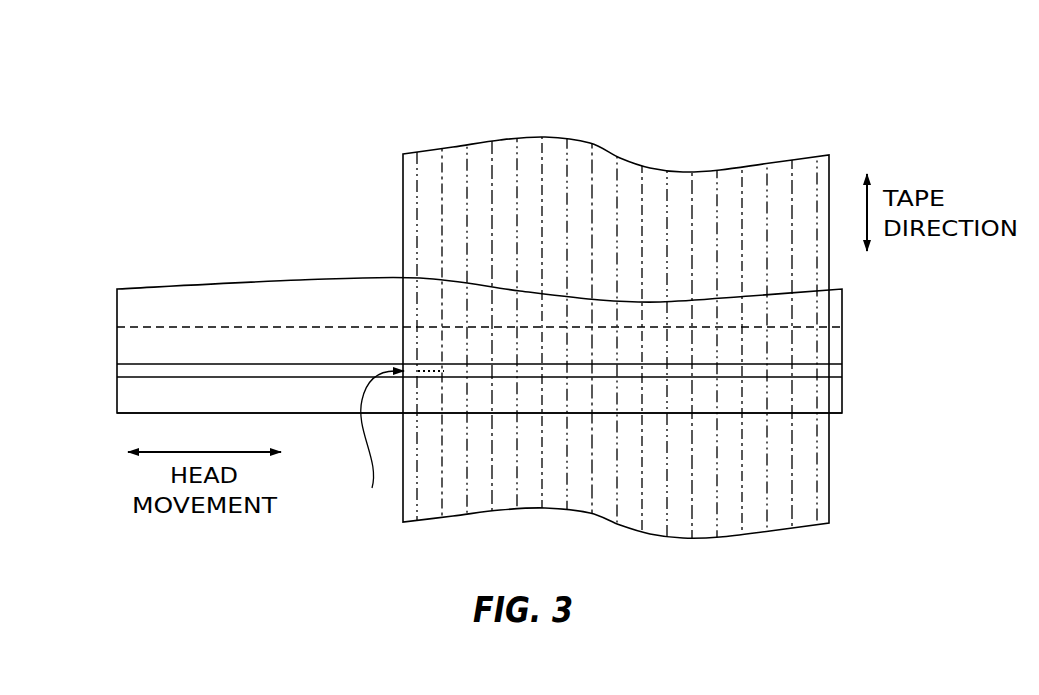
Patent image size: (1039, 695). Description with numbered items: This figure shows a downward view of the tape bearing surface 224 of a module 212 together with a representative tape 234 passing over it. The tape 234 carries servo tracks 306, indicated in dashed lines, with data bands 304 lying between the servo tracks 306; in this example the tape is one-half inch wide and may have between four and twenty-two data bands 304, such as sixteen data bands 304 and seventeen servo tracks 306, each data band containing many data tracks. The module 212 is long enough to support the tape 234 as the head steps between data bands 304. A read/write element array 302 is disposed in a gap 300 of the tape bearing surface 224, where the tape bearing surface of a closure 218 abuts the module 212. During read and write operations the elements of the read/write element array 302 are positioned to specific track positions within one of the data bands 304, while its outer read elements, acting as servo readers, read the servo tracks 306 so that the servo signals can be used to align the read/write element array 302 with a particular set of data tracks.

The module 212 is at (175, 283).
The closure 218 is at (117, 397).
The tape bearing surface 224 is at (97, 338).
The tape 234 is at (403, 172).
The gap 300 is at (117, 372).
The read/write element array 302 is at (396, 444).
The data bands 304 is at (453, 158).
The servo tracks 306 is at (616, 168).